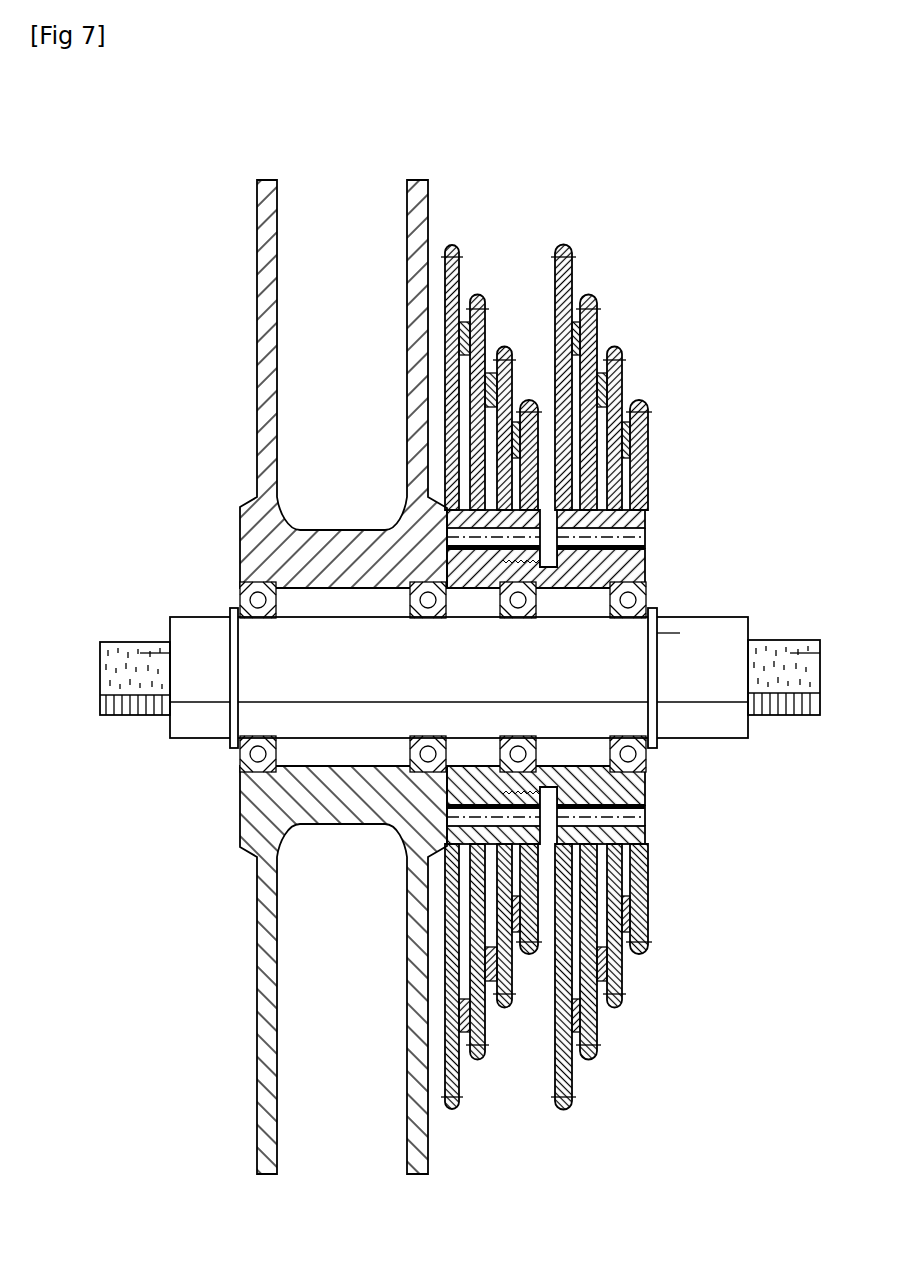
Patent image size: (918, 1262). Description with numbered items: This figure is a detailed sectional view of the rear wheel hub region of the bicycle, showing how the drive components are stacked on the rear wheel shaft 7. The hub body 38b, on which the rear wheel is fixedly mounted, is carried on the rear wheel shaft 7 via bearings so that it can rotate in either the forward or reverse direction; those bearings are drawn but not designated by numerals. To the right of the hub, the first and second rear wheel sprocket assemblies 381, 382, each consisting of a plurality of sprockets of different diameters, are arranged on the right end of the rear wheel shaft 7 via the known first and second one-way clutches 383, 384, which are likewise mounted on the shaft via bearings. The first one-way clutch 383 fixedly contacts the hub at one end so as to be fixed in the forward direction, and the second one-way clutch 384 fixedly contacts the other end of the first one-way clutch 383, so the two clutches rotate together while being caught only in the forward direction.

The hub body 38b is at (330, 548).
The first rear wheel sprocket assembly 381 is at (462, 272).
The second rear wheel sprocket assembly 382 is at (578, 272).
The first one-way clutch 383 is at (648, 543).
The second one-way clutch 384 is at (648, 568).
The rear wheel shaft 7 is at (748, 740).